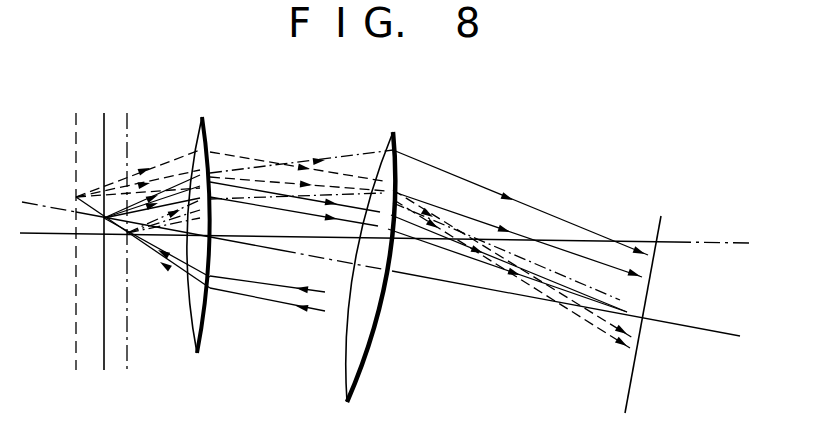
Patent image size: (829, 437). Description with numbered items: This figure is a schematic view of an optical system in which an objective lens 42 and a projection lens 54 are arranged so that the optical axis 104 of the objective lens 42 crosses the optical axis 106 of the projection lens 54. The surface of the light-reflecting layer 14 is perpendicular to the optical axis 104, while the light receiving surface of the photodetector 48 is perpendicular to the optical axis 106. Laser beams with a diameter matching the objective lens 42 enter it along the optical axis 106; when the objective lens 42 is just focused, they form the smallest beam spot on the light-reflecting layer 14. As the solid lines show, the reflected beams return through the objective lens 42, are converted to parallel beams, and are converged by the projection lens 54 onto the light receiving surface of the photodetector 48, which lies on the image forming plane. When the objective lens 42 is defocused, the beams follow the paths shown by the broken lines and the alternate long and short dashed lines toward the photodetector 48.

The light-reflecting layer 14 is at (105, 120).
The objective lens 42 is at (205, 138).
The projection lens 54 is at (398, 148).
The photodetector 48 is at (657, 234).
The optical axis of the objective lens 104 is at (43, 237).
The optical axis of the projection lens 106 is at (678, 325).